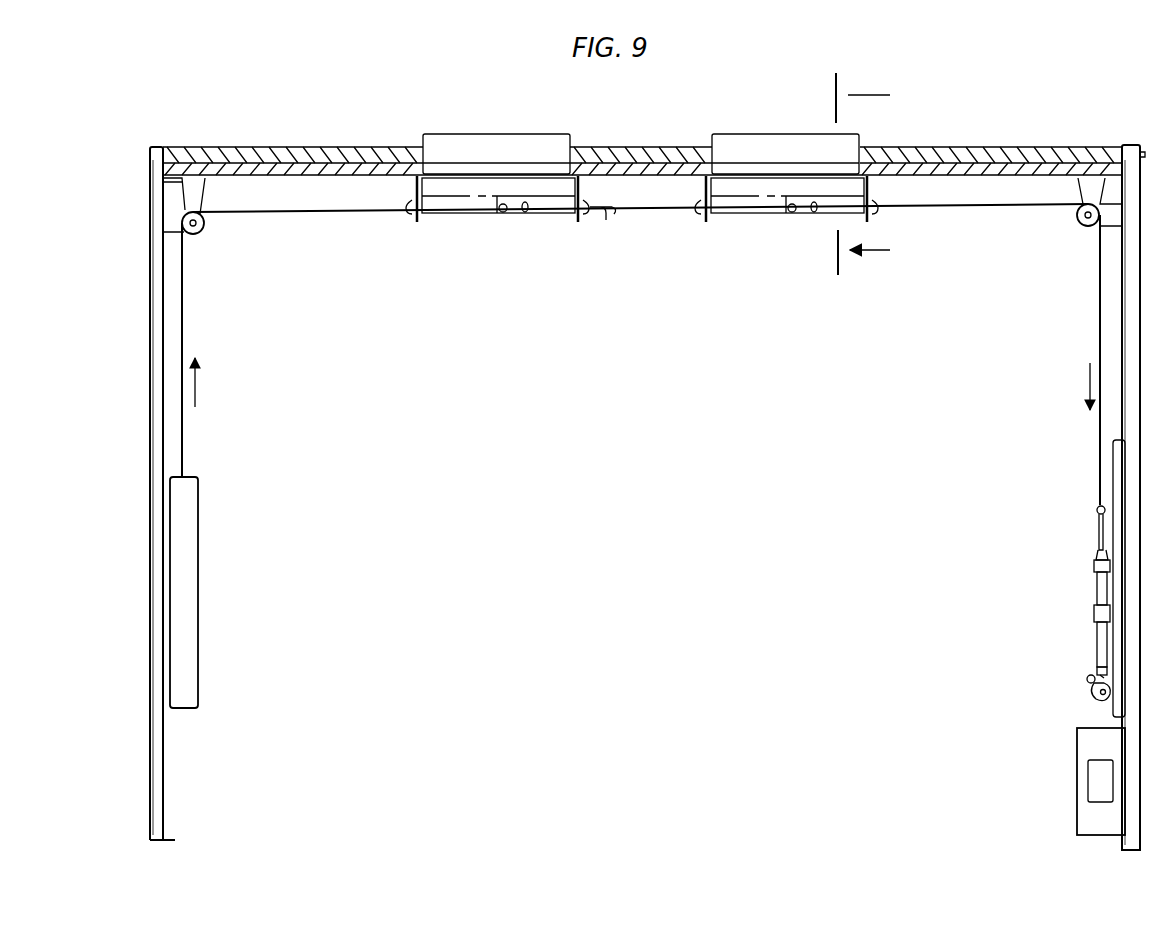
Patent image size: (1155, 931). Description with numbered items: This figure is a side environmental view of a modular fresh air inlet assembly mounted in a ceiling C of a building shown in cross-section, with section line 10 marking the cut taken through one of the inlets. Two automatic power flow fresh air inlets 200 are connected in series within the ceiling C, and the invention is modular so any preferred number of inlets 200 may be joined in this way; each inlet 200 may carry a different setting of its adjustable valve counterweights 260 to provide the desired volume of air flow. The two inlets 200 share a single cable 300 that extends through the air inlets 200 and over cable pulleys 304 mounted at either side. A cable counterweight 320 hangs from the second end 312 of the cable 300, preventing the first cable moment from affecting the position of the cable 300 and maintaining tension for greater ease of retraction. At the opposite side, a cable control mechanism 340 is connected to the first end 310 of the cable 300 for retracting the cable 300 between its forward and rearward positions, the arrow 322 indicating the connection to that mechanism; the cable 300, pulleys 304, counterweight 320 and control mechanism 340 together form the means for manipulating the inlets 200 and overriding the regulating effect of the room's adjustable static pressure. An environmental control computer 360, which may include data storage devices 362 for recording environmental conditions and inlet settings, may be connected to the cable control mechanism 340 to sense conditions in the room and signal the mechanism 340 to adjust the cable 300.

The ceiling C is at (287, 164).
The section line 10- 10 is at (879, 174).
The fresh air inlet 200 is at (533, 222).
The valve counterweight 260 is at (606, 216).
The cable 300 is at (338, 212).
The cable pulley 304 is at (200, 226).
The first end of cable 310 is at (1100, 497).
The second end of cable 312 is at (185, 465).
The cable counterweight 320 is at (198, 560).
The hook assembly 322 is at (1078, 621).
The cable control mechanism 340 is at (1094, 572).
The environmental control computer 360 is at (1080, 742).
The data storage device 362 is at (1100, 777).